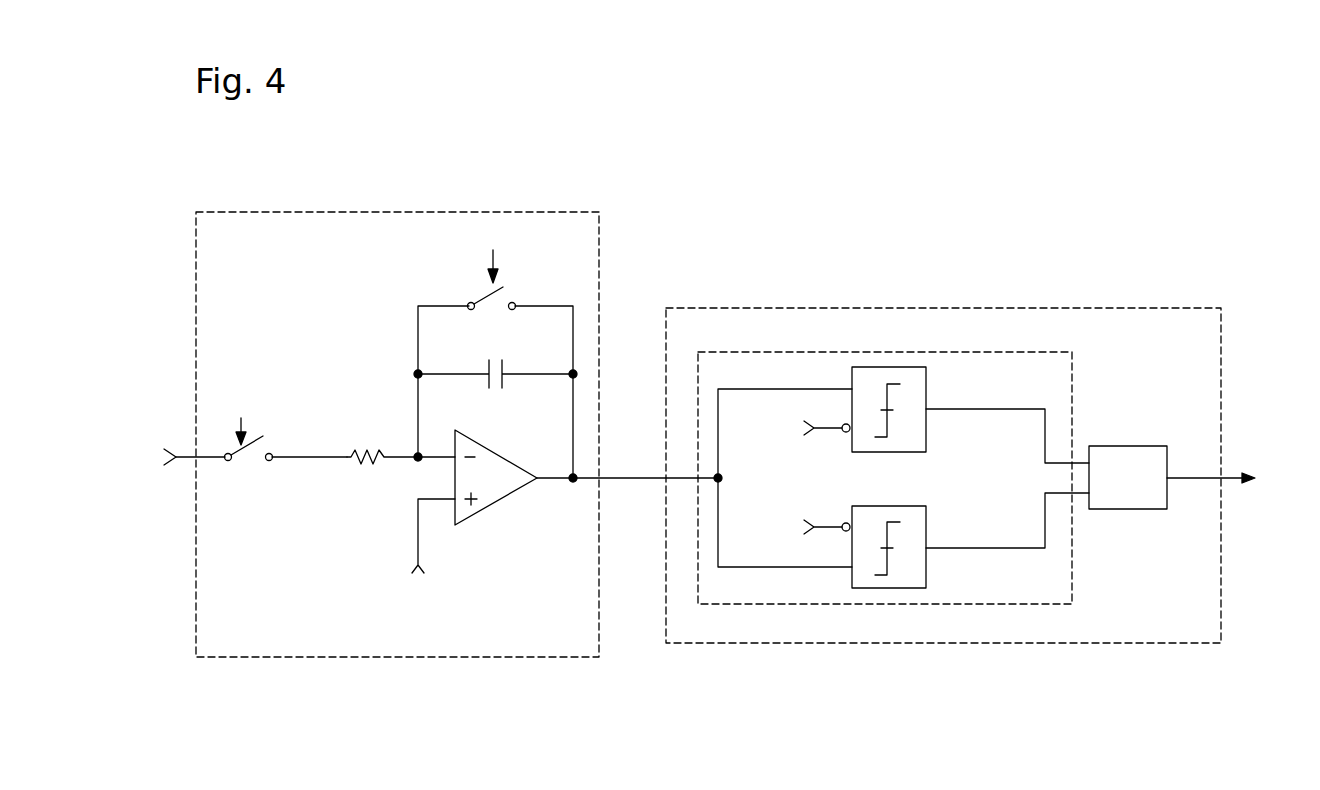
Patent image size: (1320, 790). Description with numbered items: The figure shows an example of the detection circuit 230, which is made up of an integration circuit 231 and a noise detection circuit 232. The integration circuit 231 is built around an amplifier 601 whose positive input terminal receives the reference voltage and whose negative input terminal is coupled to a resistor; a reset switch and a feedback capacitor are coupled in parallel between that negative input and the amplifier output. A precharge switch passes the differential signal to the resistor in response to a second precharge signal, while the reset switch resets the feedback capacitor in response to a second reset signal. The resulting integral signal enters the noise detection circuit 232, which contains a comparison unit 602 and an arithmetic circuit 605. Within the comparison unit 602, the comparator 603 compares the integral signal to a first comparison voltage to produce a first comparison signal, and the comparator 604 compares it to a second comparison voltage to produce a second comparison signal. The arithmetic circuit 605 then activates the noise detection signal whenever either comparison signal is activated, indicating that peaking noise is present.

The detection circuit 230 is at (893, 165).
The integration circuit 231 is at (398, 212).
The noise detection circuit 232 is at (910, 308).
The amplifier 601 is at (496, 511).
The comparison unit 602 is at (925, 351).
The comparator 603 is at (927, 380).
The comparator 604 is at (927, 568).
The arithmetic circuit 605 is at (1122, 446).